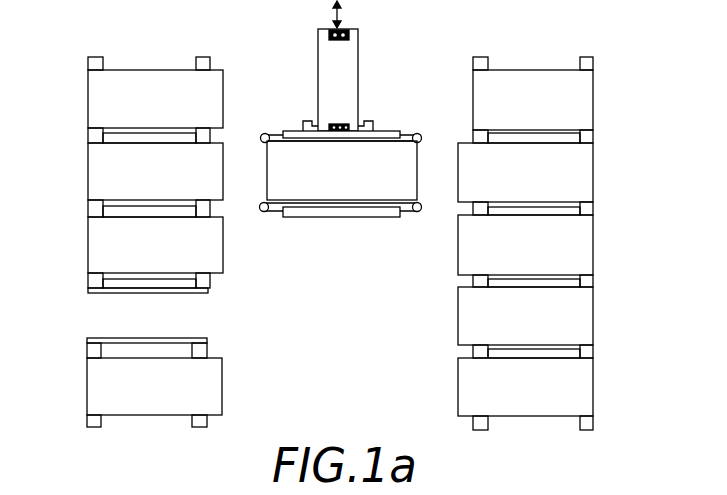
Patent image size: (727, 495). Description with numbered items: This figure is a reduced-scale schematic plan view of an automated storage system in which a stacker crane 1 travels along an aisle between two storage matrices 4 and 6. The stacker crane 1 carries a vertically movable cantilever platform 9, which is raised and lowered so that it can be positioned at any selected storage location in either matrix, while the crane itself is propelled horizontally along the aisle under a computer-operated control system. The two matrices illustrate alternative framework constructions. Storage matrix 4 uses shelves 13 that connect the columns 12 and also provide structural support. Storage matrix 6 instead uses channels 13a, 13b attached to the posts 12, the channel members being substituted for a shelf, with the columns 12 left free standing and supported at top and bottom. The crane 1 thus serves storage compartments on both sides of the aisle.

The stacker crane 1 is at (341, 132).
The storage matrix 4 is at (484, 243).
The storage matrix 6 is at (153, 242).
The vertically movable cantilever platform 9 is at (306, 217).
The columns 12 is at (97, 56).
The shelves 13 is at (548, 113).
The channel 13a is at (100, 338).
The channel 13b is at (110, 292).